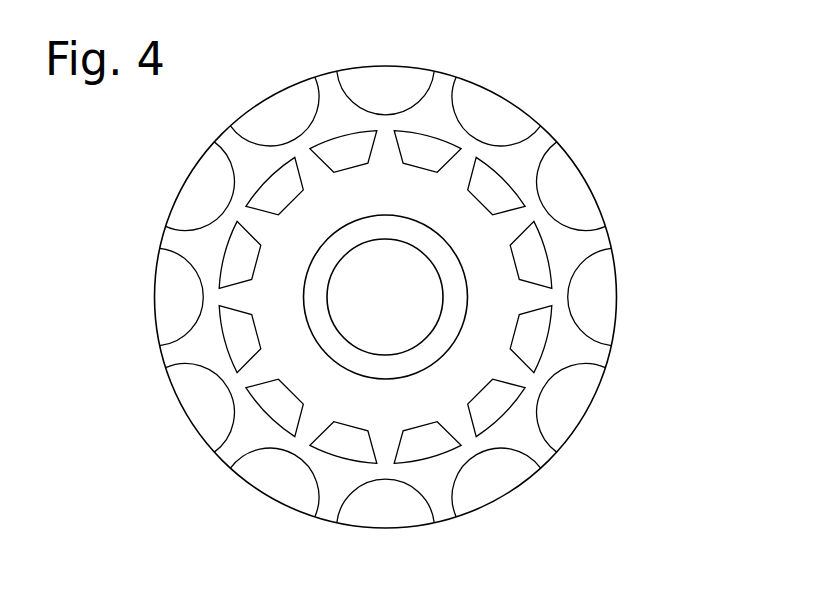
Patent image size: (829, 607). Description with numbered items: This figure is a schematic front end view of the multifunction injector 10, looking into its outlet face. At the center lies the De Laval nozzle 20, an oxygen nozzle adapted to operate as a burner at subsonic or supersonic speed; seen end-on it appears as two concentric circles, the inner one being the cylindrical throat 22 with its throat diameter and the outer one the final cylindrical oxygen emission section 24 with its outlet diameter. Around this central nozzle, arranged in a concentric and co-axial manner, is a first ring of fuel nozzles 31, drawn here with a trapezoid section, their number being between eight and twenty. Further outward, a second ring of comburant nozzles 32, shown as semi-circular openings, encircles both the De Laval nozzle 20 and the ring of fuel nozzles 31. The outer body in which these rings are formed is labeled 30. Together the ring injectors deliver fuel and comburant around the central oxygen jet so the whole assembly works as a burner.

The multifunction injector 10 is at (627, 133).
The De Laval nozzle 20 is at (452, 262).
The cylindrical throat 22 is at (434, 312).
The final cylindrical oxygen emission section 24 is at (392, 378).
The outer ring 30 is at (557, 248).
The fuel nozzles 31 is at (425, 157).
The comburant nozzles 32 is at (373, 93).